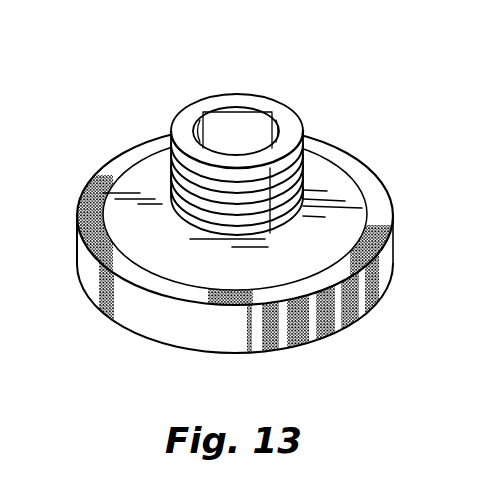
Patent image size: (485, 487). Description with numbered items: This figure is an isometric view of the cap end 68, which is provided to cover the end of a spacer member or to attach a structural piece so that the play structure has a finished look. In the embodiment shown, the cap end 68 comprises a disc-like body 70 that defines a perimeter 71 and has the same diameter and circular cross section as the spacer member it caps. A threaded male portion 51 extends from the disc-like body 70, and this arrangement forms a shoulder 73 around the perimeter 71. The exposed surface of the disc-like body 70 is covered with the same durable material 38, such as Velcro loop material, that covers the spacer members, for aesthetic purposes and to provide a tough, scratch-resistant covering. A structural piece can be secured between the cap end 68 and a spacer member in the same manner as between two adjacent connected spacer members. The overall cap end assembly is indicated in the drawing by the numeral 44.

The plug assembly 44 is at (245, 212).
The threaded male portion 51 is at (249, 98).
The cap end 68 is at (345, 158).
The disc-like body 70 is at (367, 320).
The perimeter 71 is at (219, 354).
The shoulder 73 is at (142, 233).
The durable material 38 is at (311, 343).